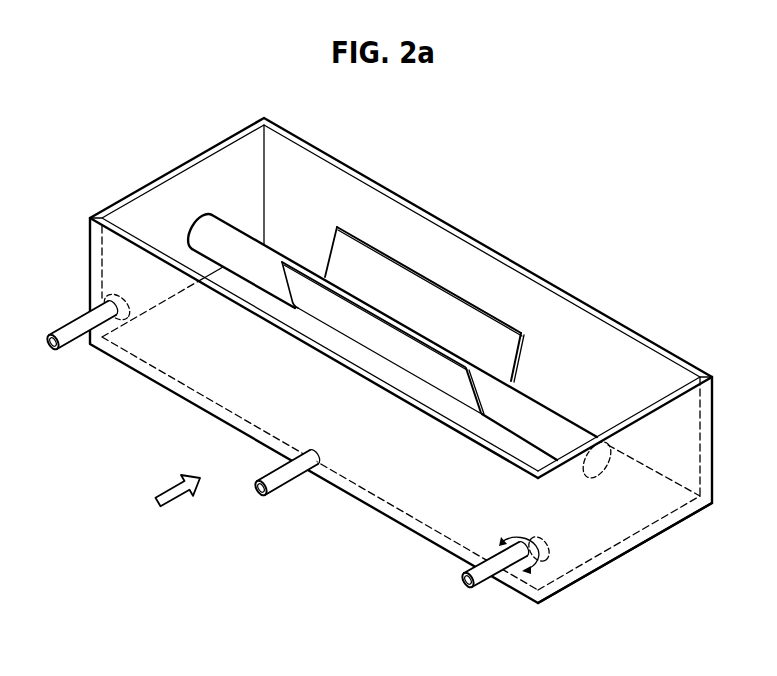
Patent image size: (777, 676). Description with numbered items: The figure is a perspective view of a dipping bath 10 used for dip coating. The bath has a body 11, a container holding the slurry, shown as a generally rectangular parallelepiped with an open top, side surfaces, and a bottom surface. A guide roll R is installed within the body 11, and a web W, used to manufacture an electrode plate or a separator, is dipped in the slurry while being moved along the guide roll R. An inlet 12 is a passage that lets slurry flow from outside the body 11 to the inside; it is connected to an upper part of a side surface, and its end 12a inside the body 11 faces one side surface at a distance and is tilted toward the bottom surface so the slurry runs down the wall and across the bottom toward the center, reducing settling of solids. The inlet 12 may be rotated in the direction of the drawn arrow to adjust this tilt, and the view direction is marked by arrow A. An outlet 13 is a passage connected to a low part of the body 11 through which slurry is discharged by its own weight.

The dipping bath 10 is at (497, 200).
The body 11 is at (673, 353).
The inlet 12 is at (490, 579).
The end of the inlet 12a is at (545, 556).
The outlet 13 is at (283, 480).
The web W is at (507, 333).
The guide roll R is at (557, 420).
The viewing direction arrow A is at (167, 498).